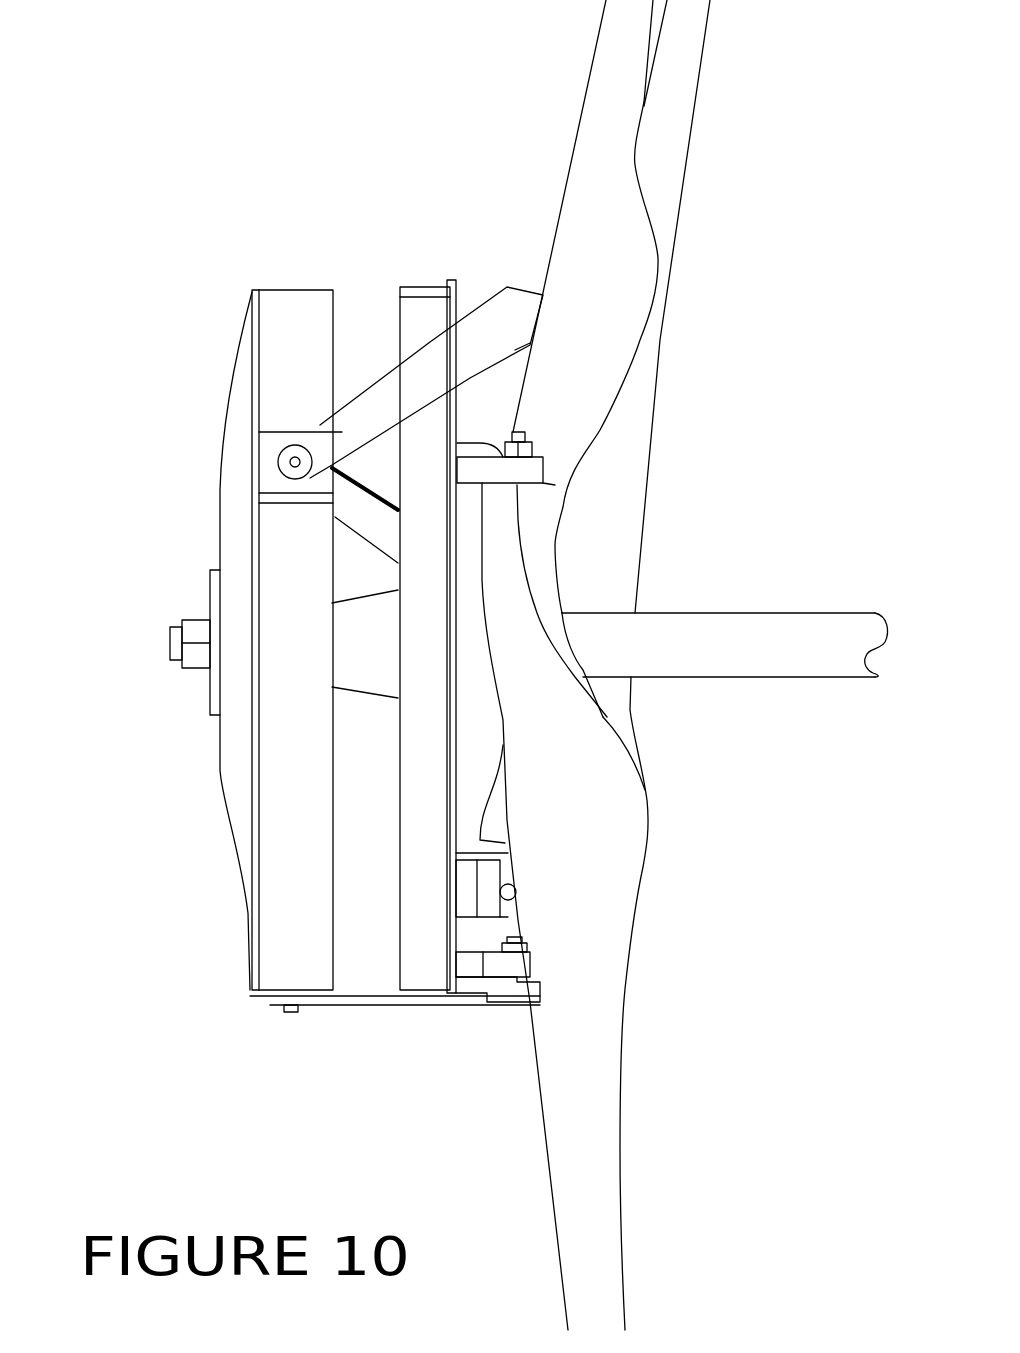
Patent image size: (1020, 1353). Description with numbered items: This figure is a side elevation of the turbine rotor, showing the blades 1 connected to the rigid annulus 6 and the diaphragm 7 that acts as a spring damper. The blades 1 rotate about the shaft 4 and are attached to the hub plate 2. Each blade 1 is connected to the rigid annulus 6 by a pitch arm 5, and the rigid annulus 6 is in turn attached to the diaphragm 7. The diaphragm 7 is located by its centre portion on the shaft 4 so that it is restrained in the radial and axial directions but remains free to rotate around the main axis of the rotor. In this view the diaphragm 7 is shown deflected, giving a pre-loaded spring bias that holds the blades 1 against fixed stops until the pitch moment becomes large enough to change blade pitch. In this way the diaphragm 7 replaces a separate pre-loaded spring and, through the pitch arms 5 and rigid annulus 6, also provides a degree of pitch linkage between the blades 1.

The blade 1 is at (597, 247).
The hub plate 2 is at (417, 283).
The shaft 4 is at (793, 640).
The pitch arm 5 is at (355, 422).
The rigid annulus 6 is at (287, 882).
The diaphragm 7 is at (232, 763).